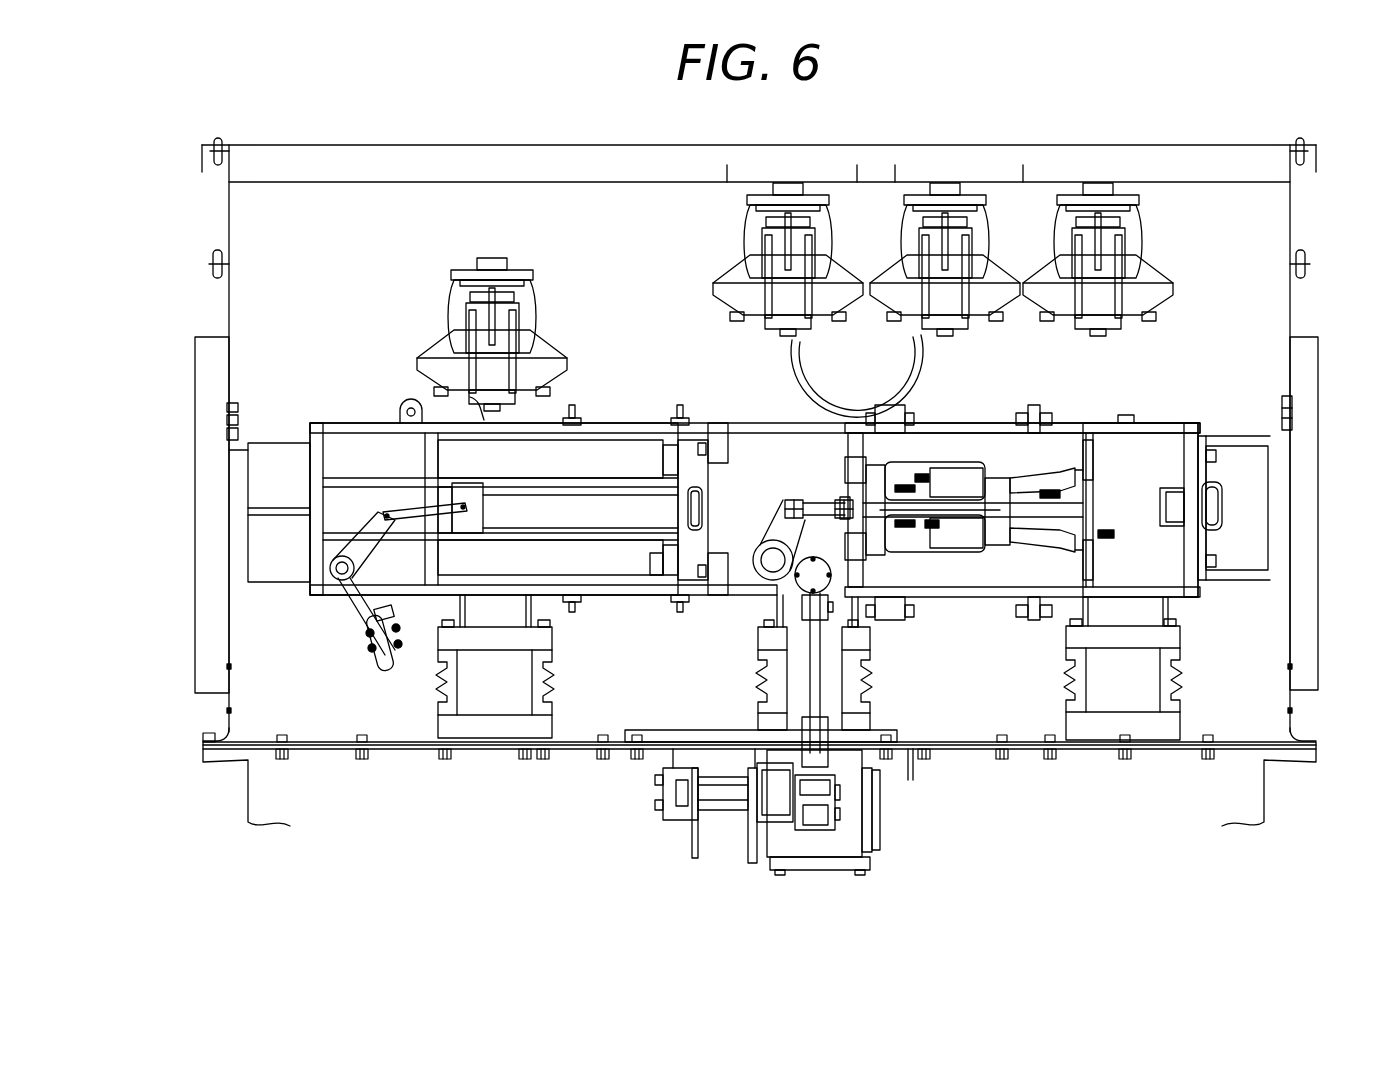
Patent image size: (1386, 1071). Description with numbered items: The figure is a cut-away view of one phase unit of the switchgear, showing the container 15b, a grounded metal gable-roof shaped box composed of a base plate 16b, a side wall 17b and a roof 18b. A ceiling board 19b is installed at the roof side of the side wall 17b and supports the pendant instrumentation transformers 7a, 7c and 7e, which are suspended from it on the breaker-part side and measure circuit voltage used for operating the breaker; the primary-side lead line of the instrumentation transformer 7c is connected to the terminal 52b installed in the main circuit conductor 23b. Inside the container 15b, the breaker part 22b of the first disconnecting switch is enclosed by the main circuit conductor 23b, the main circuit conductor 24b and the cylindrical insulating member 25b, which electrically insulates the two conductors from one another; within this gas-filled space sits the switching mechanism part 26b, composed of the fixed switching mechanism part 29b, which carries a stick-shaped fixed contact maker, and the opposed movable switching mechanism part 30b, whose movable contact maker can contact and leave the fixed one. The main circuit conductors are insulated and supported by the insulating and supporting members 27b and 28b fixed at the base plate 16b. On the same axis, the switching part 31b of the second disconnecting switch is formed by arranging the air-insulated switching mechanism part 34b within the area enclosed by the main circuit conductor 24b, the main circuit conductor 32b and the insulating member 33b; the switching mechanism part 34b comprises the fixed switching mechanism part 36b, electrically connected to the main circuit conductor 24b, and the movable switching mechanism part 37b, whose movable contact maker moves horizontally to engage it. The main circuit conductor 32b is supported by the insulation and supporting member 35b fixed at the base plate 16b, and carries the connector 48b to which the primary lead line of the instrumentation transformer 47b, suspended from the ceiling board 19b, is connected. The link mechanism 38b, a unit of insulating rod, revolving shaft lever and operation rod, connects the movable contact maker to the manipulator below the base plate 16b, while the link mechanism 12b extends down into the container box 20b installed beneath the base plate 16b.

The instrumentation transformer 7a is at (1132, 327).
The instrumentation transformer 7c is at (952, 322).
The instrumentation transformer 7e is at (752, 322).
The link mechanism 12b is at (855, 795).
The container 15b is at (228, 326).
The base plate 16b is at (255, 742).
The side wall 17b is at (1292, 284).
The roof 18b is at (330, 144).
The ceiling board 19b is at (290, 184).
The container box 20b is at (825, 870).
The breaker part 22b is at (995, 433).
The main circuit conductor 23b is at (1186, 424).
The main circuit conductor 24b is at (745, 422).
The insulating member 25b is at (978, 440).
The switching mechanism part 26b is at (1000, 682).
The insulating and supporting member 27b is at (1174, 642).
The insulating and supporting member 28b is at (763, 655).
The fixed switching mechanism part 29b is at (1008, 548).
The movable switching mechanism part 30b is at (935, 553).
The switching part 31b is at (628, 433).
The main circuit conductor 32b is at (340, 422).
The insulating member 33b is at (628, 448).
The switching mechanism part 34b is at (668, 682).
The insulation and supporting member 35b is at (487, 706).
The fixed switching mechanism part 36b is at (658, 545).
The movable switching mechanism part 37b is at (580, 545).
The link mechanism 38b is at (350, 598).
The instrumentation transformer 47b is at (535, 286).
The connector 48b is at (445, 397).
The terminal 52b is at (1130, 413).